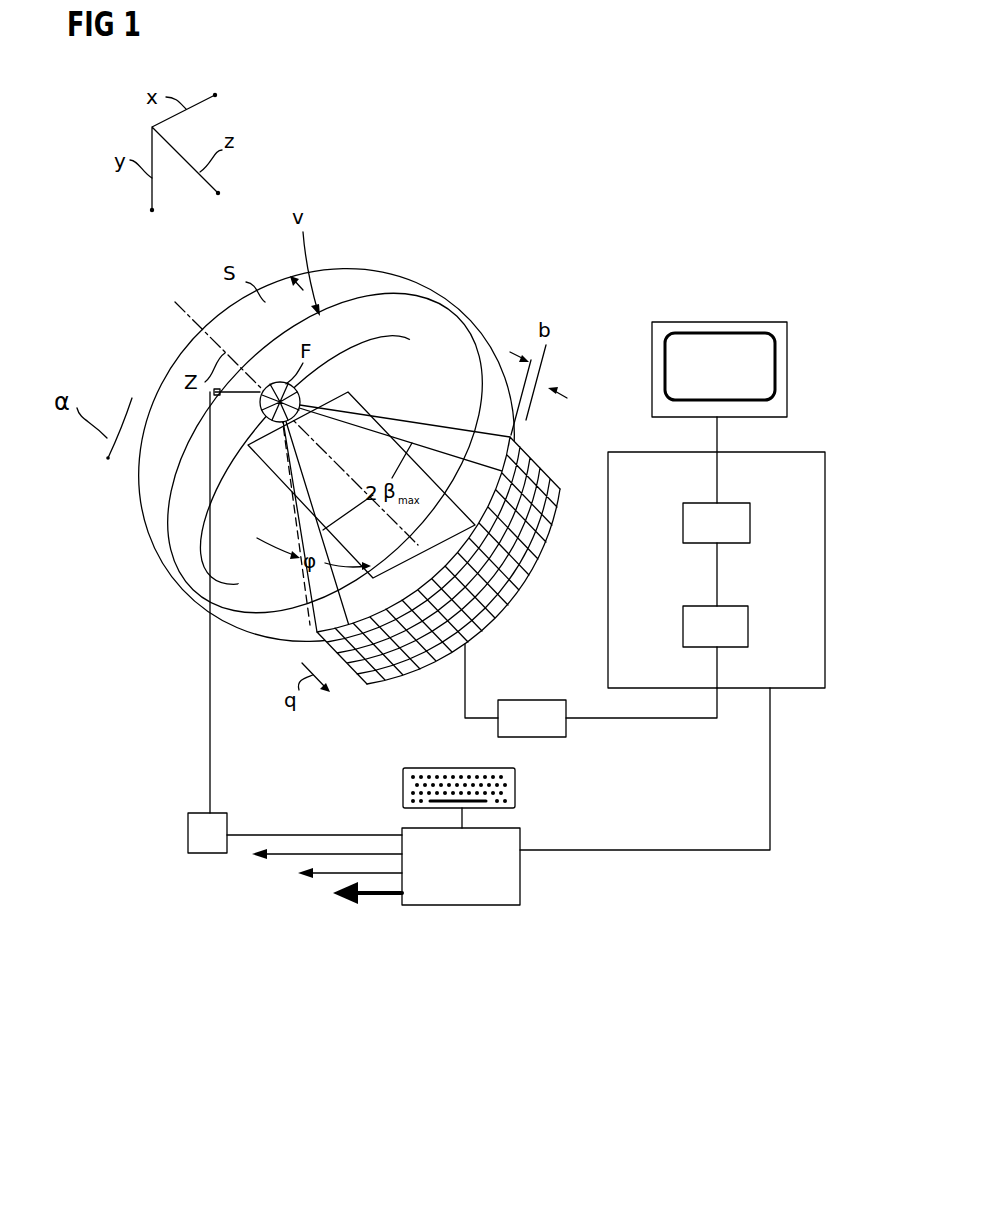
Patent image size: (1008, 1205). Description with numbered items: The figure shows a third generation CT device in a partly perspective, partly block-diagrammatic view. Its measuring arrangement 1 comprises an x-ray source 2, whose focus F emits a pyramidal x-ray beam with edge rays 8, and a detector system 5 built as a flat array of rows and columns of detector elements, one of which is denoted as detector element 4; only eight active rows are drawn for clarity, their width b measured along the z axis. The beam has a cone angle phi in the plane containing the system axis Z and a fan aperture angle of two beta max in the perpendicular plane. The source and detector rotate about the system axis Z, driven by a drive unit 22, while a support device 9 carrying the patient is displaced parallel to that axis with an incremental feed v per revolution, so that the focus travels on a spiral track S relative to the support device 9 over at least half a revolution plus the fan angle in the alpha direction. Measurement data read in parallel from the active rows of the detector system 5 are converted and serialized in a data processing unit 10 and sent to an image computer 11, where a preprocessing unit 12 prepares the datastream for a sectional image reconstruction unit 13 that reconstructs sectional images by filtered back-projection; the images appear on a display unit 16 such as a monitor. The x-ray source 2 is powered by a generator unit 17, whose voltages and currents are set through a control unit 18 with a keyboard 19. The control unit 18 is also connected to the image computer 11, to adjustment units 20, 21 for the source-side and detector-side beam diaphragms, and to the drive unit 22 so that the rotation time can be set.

The measuring arrangement 1 is at (196, 660).
The x-ray source 2 is at (262, 405).
The detector element 4 is at (498, 612).
The detector system 5 is at (415, 673).
The edge rays 8 is at (300, 585).
The support device 9 is at (277, 466).
The data processing unit 10 is at (522, 708).
The image computer 11 is at (615, 452).
The preprocessing unit 12 is at (740, 637).
The sectional image reconstruction unit 13 is at (743, 518).
The display unit 16 is at (660, 338).
The generator unit 17 is at (207, 848).
The control unit 18 is at (510, 893).
The keyboard 19 is at (408, 795).
The adjustment unit 20 is at (285, 857).
The adjustment unit 21 is at (326, 875).
The drive unit 22 is at (370, 897).